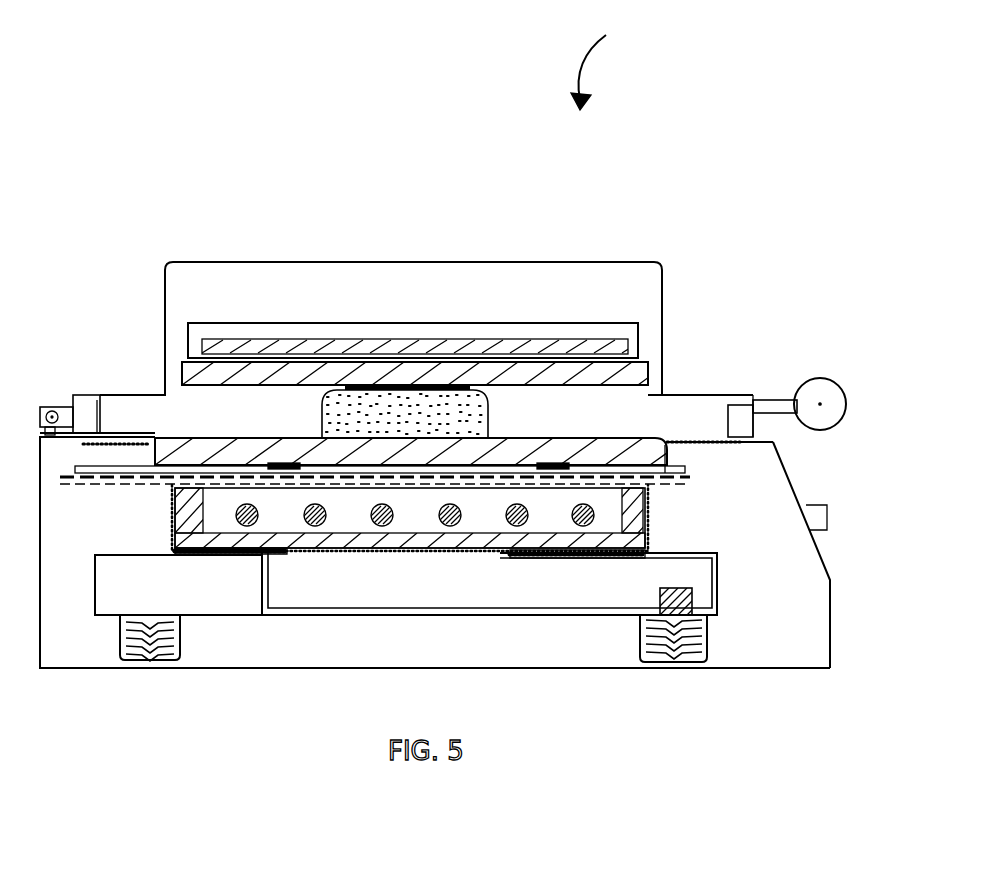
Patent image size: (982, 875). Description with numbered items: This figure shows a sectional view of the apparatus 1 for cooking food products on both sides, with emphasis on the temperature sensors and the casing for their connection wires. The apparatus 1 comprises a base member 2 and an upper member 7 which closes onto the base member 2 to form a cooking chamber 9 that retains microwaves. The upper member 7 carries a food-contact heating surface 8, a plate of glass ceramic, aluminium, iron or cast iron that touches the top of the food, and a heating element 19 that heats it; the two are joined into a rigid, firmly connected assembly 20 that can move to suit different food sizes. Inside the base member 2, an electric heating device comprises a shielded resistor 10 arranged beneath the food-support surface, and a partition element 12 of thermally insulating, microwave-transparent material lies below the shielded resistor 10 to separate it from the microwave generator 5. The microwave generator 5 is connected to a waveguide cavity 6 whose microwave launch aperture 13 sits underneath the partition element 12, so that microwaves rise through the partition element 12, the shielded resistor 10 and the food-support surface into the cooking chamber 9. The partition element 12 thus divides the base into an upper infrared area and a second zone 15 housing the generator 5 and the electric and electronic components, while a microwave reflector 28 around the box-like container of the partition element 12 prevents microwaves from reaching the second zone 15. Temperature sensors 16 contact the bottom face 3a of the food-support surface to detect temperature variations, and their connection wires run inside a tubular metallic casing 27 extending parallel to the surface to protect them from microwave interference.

The apparatus for cooking food products 1 is at (598, 65).
The base member 2 is at (797, 483).
The bottom face 3a is at (502, 458).
The microwave generator 5 is at (705, 647).
The waveguide cavity 6 is at (590, 578).
The upper member 7 is at (241, 262).
The food-contact heating surface 8 is at (640, 369).
The cooking chamber 9 is at (233, 412).
The shielded resistor 10 is at (458, 512).
The partition element 12 is at (177, 513).
The microwave launch aperture 13 is at (307, 557).
The second zone 15 is at (760, 573).
The temperature sensors 16 is at (277, 463).
The heating element 19 is at (578, 350).
The rigid assembly 20 is at (648, 338).
The metallic casing 27 is at (672, 482).
The microwave reflector 28 is at (177, 530).